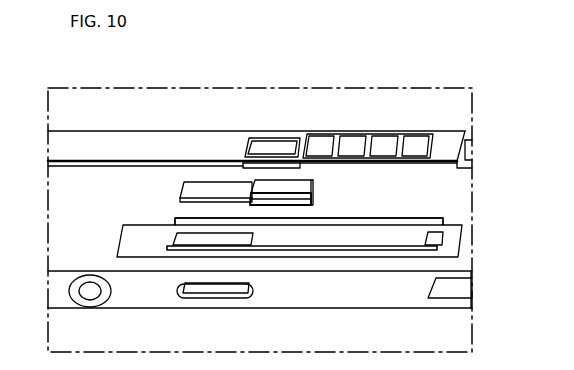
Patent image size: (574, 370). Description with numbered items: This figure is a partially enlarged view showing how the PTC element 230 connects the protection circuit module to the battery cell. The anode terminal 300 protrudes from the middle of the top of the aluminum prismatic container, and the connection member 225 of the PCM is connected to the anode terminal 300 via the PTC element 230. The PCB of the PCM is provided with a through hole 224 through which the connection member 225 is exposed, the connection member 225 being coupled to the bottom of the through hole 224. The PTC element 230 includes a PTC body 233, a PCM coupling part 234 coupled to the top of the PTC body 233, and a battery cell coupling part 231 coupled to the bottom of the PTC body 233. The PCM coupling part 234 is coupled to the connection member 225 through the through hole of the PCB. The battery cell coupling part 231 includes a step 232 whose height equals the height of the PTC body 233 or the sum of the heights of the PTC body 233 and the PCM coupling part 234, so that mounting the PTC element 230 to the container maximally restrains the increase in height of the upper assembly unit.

The through hole 224 is at (260, 144).
The connection member 225 is at (294, 170).
The PTC element 230 is at (156, 198).
The battery cell coupling part 231 is at (213, 189).
The step 232 is at (243, 206).
The PTC body 233 is at (312, 202).
The PCM coupling part 234 is at (313, 188).
The anode terminal 300 is at (214, 288).